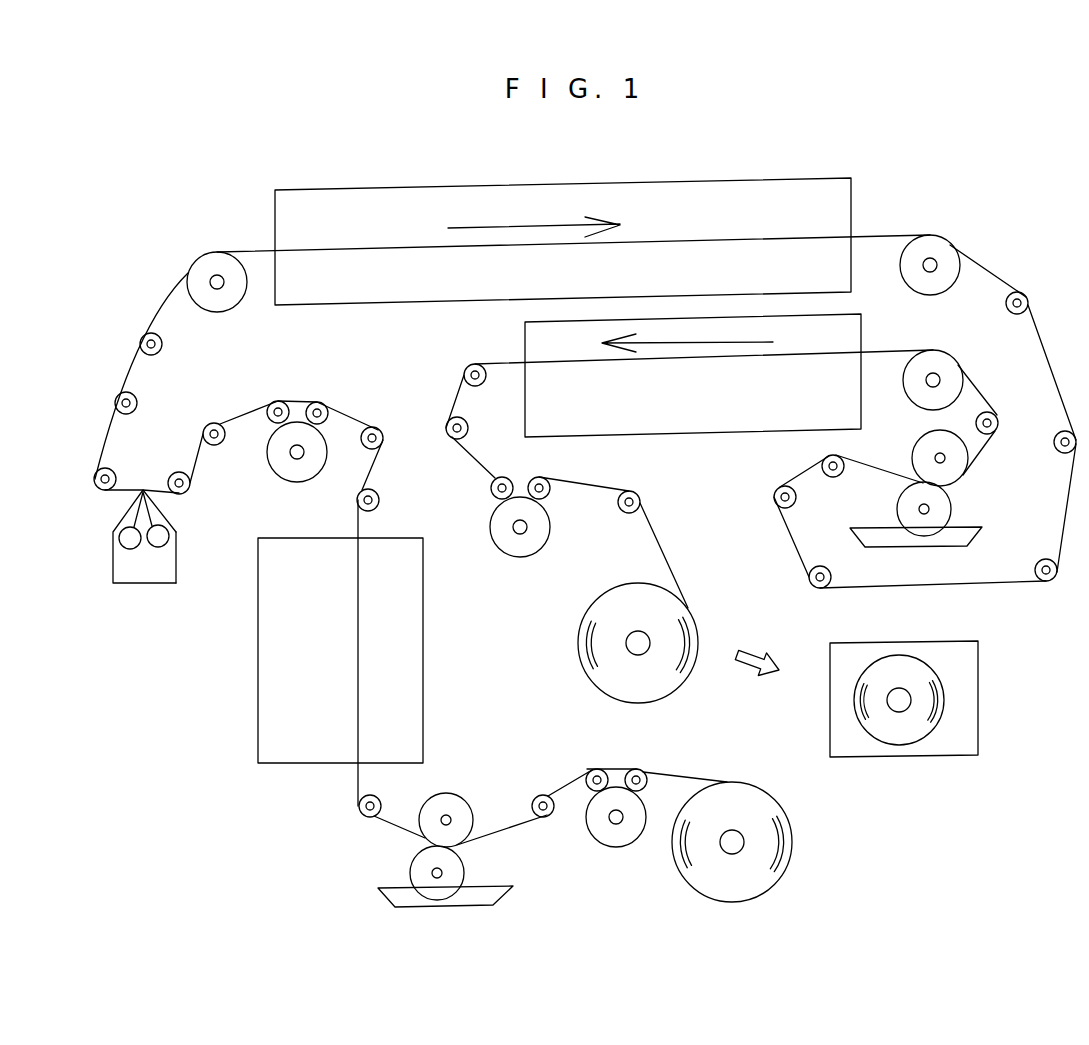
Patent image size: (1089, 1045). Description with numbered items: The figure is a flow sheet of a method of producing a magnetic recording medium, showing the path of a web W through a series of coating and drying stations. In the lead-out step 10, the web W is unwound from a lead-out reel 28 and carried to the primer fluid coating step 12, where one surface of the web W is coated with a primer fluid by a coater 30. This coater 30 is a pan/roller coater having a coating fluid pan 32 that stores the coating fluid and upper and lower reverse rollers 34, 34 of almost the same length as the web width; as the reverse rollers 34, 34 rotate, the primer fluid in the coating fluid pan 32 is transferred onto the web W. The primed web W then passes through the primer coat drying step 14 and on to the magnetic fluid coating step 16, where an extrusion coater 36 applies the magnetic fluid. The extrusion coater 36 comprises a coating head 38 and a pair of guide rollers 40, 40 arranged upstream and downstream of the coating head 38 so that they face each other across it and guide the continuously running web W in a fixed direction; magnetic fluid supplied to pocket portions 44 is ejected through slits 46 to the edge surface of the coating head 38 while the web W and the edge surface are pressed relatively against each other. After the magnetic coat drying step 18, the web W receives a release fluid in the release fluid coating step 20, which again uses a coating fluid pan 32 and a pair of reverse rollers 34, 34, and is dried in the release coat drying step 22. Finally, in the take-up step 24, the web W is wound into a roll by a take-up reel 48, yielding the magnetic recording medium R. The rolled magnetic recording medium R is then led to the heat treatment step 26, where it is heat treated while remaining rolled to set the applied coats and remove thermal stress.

The lead-out step 10 is at (790, 860).
The primer fluid coating step 12 is at (360, 883).
The primer coat drying step 14 is at (245, 678).
The magnetic fluid coating step 16 is at (140, 584).
The magnetic coat drying step 18 is at (856, 200).
The release fluid coating step 20 is at (985, 487).
The release coat drying step 22 is at (682, 440).
The take-up step 24 is at (577, 660).
The heat treatment step 26 is at (903, 765).
The lead-out reel 28 is at (740, 838).
The coater 30 is at (481, 800).
The coating fluid pan 32 is at (488, 895).
The reverse rollers 34 is at (445, 798).
The extrusion coater 36 is at (182, 563).
The coating head 38 is at (178, 540).
The guide rollers 40 is at (100, 470).
The pocket portions 44 is at (120, 538).
The slits 46 is at (132, 520).
The take-up reel 48 is at (648, 638).
The magnetic recording medium R is at (899, 672).
The web W is at (683, 772).